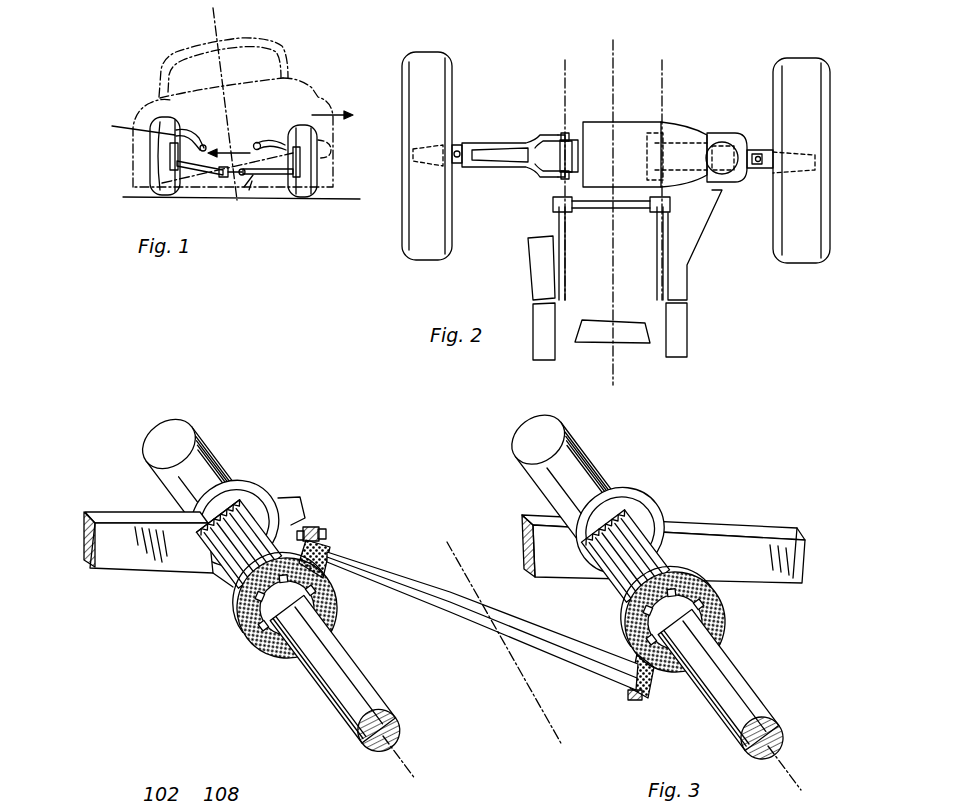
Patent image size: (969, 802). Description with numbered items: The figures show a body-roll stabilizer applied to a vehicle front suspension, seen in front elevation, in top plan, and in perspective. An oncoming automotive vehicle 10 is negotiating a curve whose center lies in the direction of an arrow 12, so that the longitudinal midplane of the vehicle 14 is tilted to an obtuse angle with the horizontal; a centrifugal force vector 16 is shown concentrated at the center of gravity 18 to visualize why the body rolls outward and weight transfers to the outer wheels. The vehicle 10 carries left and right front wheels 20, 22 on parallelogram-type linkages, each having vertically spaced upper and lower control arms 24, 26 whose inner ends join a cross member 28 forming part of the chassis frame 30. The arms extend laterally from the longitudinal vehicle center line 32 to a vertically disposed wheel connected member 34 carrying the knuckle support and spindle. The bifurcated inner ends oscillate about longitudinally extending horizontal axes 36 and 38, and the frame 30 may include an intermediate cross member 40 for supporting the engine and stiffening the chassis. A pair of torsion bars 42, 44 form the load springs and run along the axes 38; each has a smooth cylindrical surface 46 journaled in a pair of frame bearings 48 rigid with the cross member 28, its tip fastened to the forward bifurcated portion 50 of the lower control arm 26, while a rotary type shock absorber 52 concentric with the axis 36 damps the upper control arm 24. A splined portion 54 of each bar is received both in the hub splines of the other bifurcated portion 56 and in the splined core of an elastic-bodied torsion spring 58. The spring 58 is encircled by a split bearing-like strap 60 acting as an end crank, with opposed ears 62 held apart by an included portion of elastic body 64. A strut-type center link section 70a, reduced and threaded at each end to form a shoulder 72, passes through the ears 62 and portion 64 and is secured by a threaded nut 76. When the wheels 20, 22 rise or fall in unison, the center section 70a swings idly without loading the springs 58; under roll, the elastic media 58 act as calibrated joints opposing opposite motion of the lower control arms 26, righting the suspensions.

In FIG. 1, the automotive vehicle 10 is at (277, 48).
In FIG. 1, the arrow 12 is at (333, 112).
In FIG. 1, the longitudinal midplane of the vehicle 14 is at (216, 28).
In FIG. 1, the vector 16 is at (229, 150).
In FIG. 1, the center of gravity 18 is at (232, 153).
In FIG. 1, the left front wheel 20 is at (312, 193).
In FIG. 2, the left front wheel 20 is at (441, 83).
In FIG. 1, the right front wheel 22 is at (163, 192).
In FIG. 2, the right front wheel 22 is at (790, 67).
In FIG. 1, the upper control arm 24 is at (188, 133).
In FIG. 2, the upper control arm 24 is at (739, 135).
In FIG. 1, the lower control arm 26 is at (205, 178).
In FIG. 2, the lower control arm 26 is at (511, 116).
In FIG. 3, the lower control arm 26 is at (118, 527).
In FIG. 2, the cross member 28 is at (601, 138).
In FIG. 2, the vehicle chassis frame 30 is at (684, 327).
In FIG. 2, the vehicle center line 32 is at (616, 360).
In FIG. 3, the vehicle center line 32 is at (540, 702).
In FIG. 1, the wheel connected member 34 is at (131, 128).
In FIG. 2, the horizontal axis 36 is at (663, 90).
In FIG. 3, the horizontal axis 36 is at (780, 760).
In FIG. 2, the horizontal axis 38 is at (563, 86).
In FIG. 3, the horizontal axis 38 is at (398, 756).
In FIG. 2, the intermediate cross member 40 is at (603, 324).
In FIG. 2, the torsion bar 42 is at (565, 274).
In FIG. 3, the torsion bar 42 is at (364, 688).
In FIG. 2, the torsion bar 44 is at (657, 261).
In FIG. 3, the torsion bar 44 is at (730, 667).
In FIG. 2, the smooth cylindrical surface 46 is at (557, 157).
In FIG. 3, the smooth cylindrical surface 46 is at (197, 434).
In FIG. 2, the frame bearing 48 is at (570, 137).
In FIG. 3, the frame bearing 48 is at (227, 487).
In FIG. 2, the forward bifurcated inner end portion 50 is at (544, 132).
In FIG. 2, the rotary type shock absorber 52 is at (724, 143).
In FIG. 3, the splined portion 54 is at (263, 542).
In FIG. 2, the bifurcated portion 56 is at (560, 180).
In FIG. 3, the bifurcated portion 56 is at (245, 514).
In FIG. 3, the elastic-bodied torsion spring 58 is at (260, 633).
In FIG. 3, the split bearing-like strap 60 is at (338, 627).
In FIG. 3, the ears 62 is at (331, 530).
In FIG. 3, the portion of elastic body 64 is at (333, 553).
In FIG. 2, the center link section 70a is at (617, 209).
In FIG. 3, the center link section 70a is at (497, 612).
In FIG. 3, the shoulder 72 is at (329, 562).
In FIG. 3, the threaded nut 76 is at (313, 520).